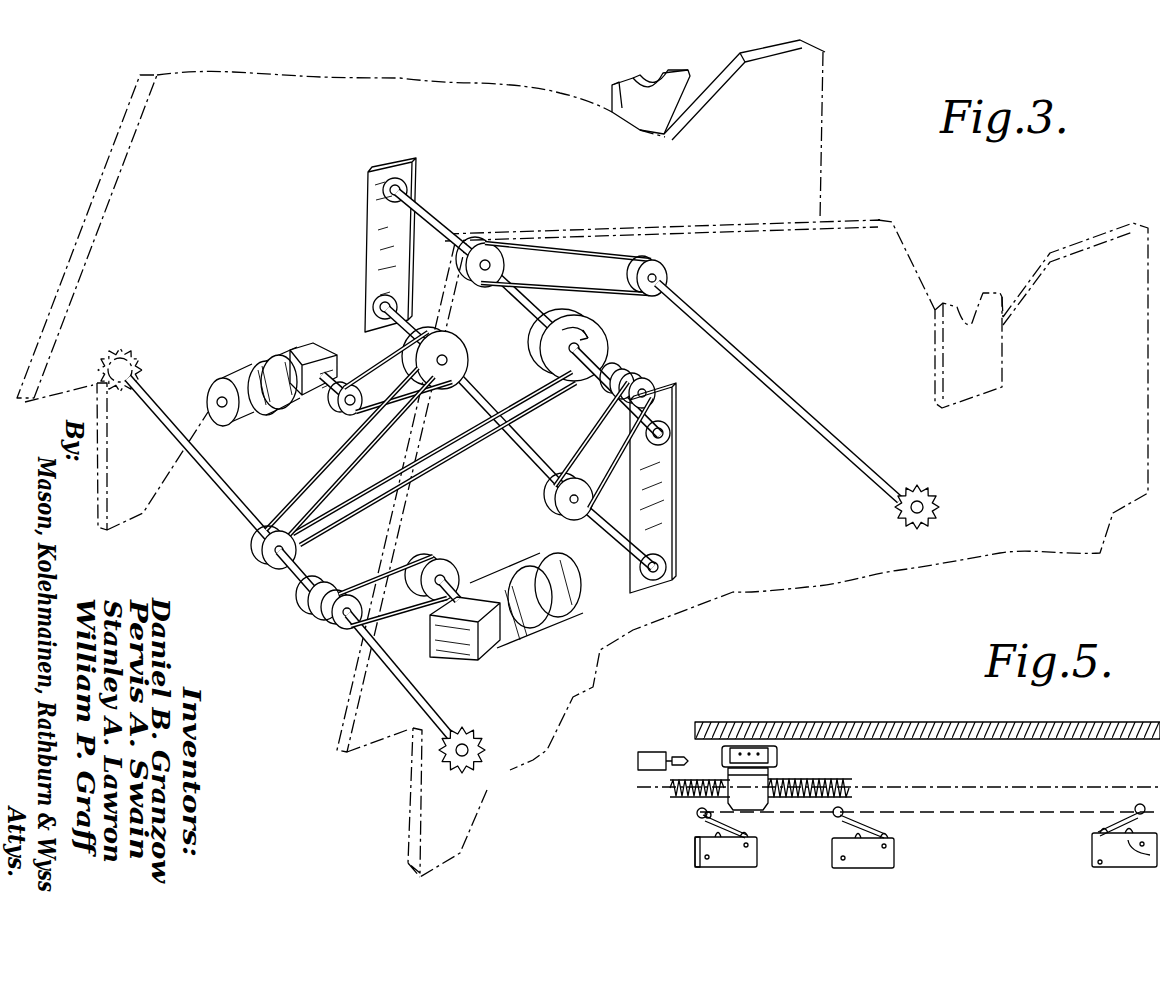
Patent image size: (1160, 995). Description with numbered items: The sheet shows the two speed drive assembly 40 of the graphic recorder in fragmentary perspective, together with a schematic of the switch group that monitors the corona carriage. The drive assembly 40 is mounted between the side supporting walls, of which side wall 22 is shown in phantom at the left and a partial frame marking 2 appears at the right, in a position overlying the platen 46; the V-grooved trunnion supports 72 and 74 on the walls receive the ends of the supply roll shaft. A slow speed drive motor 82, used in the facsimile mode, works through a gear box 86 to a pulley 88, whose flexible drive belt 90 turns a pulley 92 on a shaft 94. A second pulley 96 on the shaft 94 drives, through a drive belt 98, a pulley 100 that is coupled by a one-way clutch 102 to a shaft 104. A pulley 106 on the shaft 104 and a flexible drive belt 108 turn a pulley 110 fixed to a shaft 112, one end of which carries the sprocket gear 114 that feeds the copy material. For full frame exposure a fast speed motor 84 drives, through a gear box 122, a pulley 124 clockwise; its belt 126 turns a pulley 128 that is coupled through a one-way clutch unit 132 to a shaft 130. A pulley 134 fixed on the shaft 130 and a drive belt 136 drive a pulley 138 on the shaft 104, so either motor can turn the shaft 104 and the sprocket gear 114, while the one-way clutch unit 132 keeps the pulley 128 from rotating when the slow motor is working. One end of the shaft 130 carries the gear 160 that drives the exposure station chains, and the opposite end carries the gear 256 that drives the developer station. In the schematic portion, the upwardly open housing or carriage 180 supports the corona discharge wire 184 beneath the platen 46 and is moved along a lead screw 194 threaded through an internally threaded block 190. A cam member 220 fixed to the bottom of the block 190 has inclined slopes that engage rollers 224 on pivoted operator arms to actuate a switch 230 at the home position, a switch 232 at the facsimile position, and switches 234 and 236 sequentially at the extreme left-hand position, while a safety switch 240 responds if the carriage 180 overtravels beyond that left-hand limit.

In FIG. 3, the machine frame 2 is at (1130, 225).
In FIG. 3, the side supporting wall 22 is at (88, 213).
In FIG. 3, the controllable drive assembly 40 is at (853, 128).
In FIG. 5, the platen 46 is at (893, 722).
In FIG. 3, the trunnion support 72 is at (608, 82).
In FIG. 3, the trunnion support 74 is at (982, 296).
In FIG. 3, the slow speed drive motor 82 is at (258, 365).
In FIG. 3, the fast speed motor 84 is at (553, 630).
In FIG. 3, the gear box 86 is at (313, 343).
In FIG. 3, the pulley 88 is at (343, 413).
In FIG. 3, the flexible drive belt 90 is at (385, 405).
In FIG. 3, the pulley 92 is at (462, 353).
In FIG. 3, the shaft 94 is at (414, 330).
In FIG. 3, the second pulley 96 is at (560, 498).
In FIG. 3, the drive belt 98 is at (596, 433).
In FIG. 3, the pulley 100 is at (640, 388).
In FIG. 3, the one-way clutch 102 is at (632, 377).
In FIG. 3, the shaft 104 is at (418, 210).
In FIG. 3, the second pulley 106 is at (490, 245).
In FIG. 3, the flexible drive belt 108 is at (630, 300).
In FIG. 3, the pulley 110 is at (672, 279).
In FIG. 3, the shaft 112 is at (808, 395).
In FIG. 3, the sprocket gear 114 is at (937, 500).
In FIG. 3, the gear box 122 is at (465, 655).
In FIG. 3, the pulley 124 is at (448, 568).
In FIG. 3, the belt 126 is at (416, 560).
In FIG. 3, the pulley 128 is at (336, 636).
In FIG. 3, the shaft 130 is at (325, 568).
In FIG. 3, the one-way clutch unit 132 is at (302, 610).
In FIG. 3, the pulley 134 is at (266, 562).
In FIG. 3, the drive belt 136 is at (318, 494).
In FIG. 3, the pulley 138 is at (608, 348).
In FIG. 3, the gear 160 is at (480, 762).
In FIG. 5, the housing 180 is at (780, 760).
In FIG. 5, the corona discharge wire 184 is at (740, 752).
In FIG. 5, the internally threaded block 190 is at (770, 778).
In FIG. 5, the lead screw 194 is at (836, 782).
In FIG. 5, the cam member 220 is at (764, 810).
In FIG. 5, the roller 224 is at (1140, 805).
In FIG. 5, the switch 230 is at (1100, 862).
In FIG. 5, the switch 232 is at (895, 862).
In FIG. 5, the switch 234 is at (695, 852).
In FIG. 5, the switch 236 is at (714, 863).
In FIG. 5, the safety switch 240 is at (655, 753).
In FIG. 3, the gear 256 is at (122, 347).